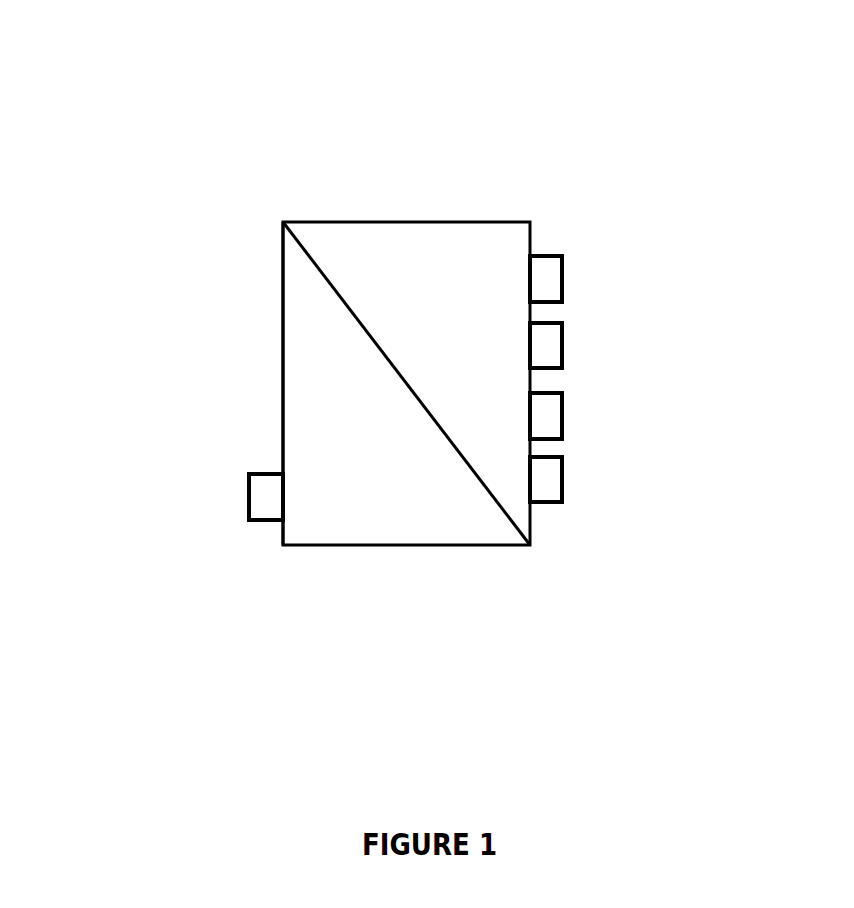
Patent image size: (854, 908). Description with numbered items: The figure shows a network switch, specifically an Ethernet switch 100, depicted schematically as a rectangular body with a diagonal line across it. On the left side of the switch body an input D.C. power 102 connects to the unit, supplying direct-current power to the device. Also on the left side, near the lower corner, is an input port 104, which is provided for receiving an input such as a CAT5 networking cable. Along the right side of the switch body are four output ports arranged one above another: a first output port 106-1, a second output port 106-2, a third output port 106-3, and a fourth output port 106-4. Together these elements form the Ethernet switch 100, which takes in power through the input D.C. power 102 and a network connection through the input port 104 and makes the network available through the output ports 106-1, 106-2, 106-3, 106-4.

The Ethernet switch 100 is at (452, 92).
The input D.C. power 102 is at (283, 319).
The input port 104 is at (248, 490).
The output port 106-1 is at (562, 281).
The output port 106-2 is at (562, 345).
The output port 106-3 is at (562, 414).
The output port 106-4 is at (562, 477).